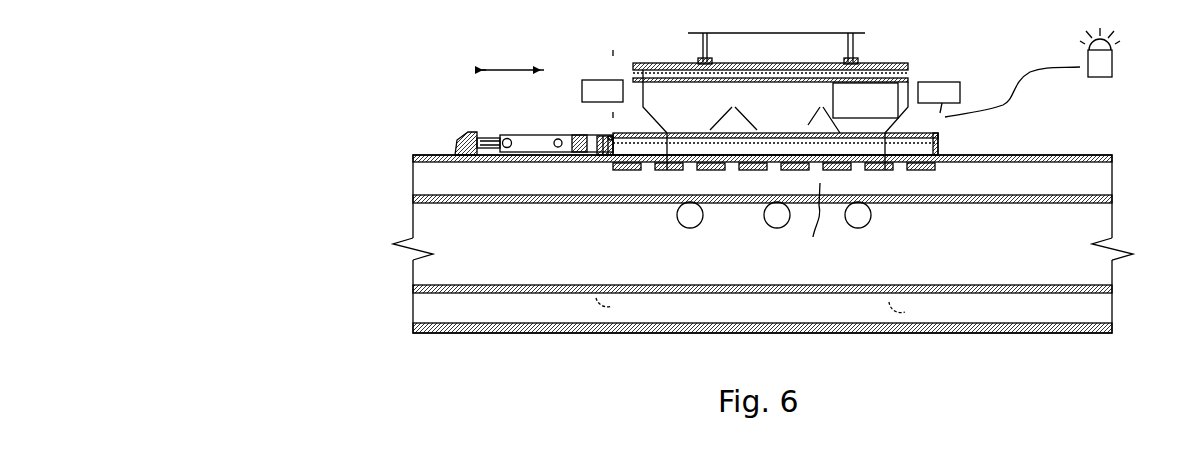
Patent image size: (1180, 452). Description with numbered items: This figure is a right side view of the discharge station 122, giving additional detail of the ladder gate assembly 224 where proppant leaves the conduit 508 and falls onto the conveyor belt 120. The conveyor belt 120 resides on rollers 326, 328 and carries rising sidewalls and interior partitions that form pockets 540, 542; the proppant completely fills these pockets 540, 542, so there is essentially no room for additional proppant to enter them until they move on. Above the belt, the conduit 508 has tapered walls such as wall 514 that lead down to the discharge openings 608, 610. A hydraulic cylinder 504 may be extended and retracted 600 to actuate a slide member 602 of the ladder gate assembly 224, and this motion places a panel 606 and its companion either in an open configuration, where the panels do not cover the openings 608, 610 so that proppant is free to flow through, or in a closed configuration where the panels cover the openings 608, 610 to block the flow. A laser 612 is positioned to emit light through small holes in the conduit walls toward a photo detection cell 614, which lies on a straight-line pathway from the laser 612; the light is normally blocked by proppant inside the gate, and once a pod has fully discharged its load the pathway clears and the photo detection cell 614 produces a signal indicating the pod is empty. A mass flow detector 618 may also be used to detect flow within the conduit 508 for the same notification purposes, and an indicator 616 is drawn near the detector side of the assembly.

The conveyor belt 120 is at (1025, 163).
The discharge station 122 is at (610, 9).
The ladder gate assembly 224 is at (930, 64).
The roller 326 is at (868, 222).
The roller 328 is at (912, 300).
The hydraulic cylinder 504 is at (532, 143).
The conduit 508 is at (908, 67).
The tapered wall 514 is at (774, 97).
The pocket 540 is at (718, 200).
The pocket 542 is at (814, 218).
The extension and retraction motion 600 is at (502, 74).
The slide member 602 is at (602, 157).
The panel 606 is at (647, 185).
The opening 608 is at (685, 157).
The opening 610 is at (813, 160).
The laser 612 is at (758, 183).
The photo detection cell 614 is at (947, 100).
The indicator light 616 is at (1113, 57).
The mass flow detector 618 is at (865, 100).